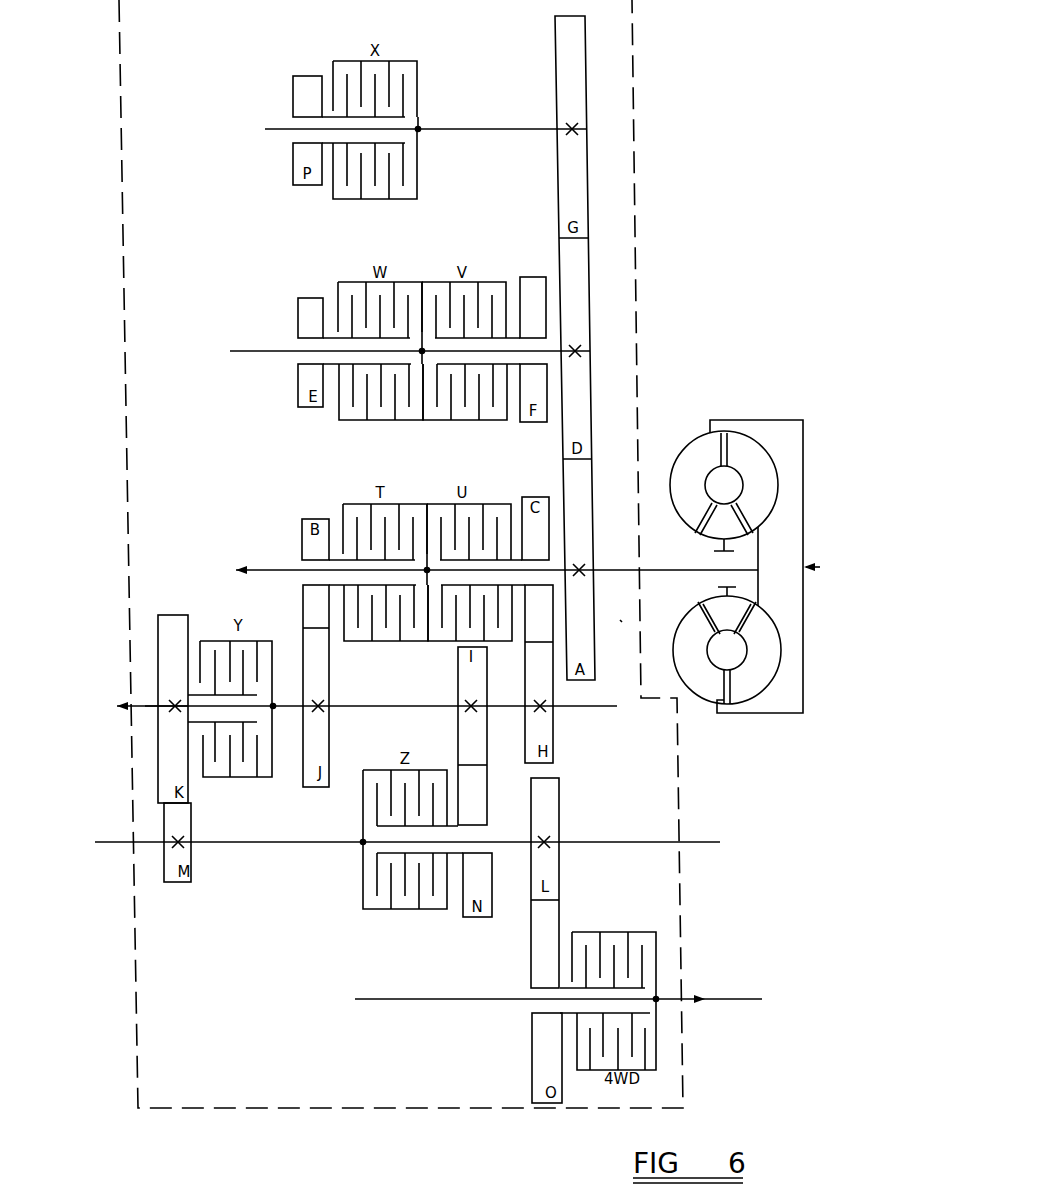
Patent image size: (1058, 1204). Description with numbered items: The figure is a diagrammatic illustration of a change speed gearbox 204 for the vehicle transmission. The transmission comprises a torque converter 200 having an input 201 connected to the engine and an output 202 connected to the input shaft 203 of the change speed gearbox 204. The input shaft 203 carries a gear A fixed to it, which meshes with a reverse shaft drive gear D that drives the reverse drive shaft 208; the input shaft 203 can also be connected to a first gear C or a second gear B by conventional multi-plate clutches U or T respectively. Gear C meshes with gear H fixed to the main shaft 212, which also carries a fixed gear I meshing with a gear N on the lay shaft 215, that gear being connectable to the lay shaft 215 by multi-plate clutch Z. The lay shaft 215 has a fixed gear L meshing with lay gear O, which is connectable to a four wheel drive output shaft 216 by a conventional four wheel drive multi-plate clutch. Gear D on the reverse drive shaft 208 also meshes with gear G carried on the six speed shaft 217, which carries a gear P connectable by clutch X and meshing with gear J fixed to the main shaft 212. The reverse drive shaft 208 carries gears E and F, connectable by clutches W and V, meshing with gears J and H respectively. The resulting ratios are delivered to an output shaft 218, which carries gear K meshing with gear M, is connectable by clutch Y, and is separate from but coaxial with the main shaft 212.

The torque converter 200 is at (748, 420).
The input 201 is at (820, 567).
The output 202 is at (692, 569).
The input shaft 203 is at (620, 620).
The change speed gearbox 204 is at (640, 212).
The reverse drive shaft 208 is at (263, 351).
The main shaft 212 is at (369, 706).
The lay shaft 215 is at (260, 842).
The four wheel drive output shaft 216 is at (718, 999).
The 6 speed shaft 217 is at (476, 129).
The output shaft 218 is at (145, 706).